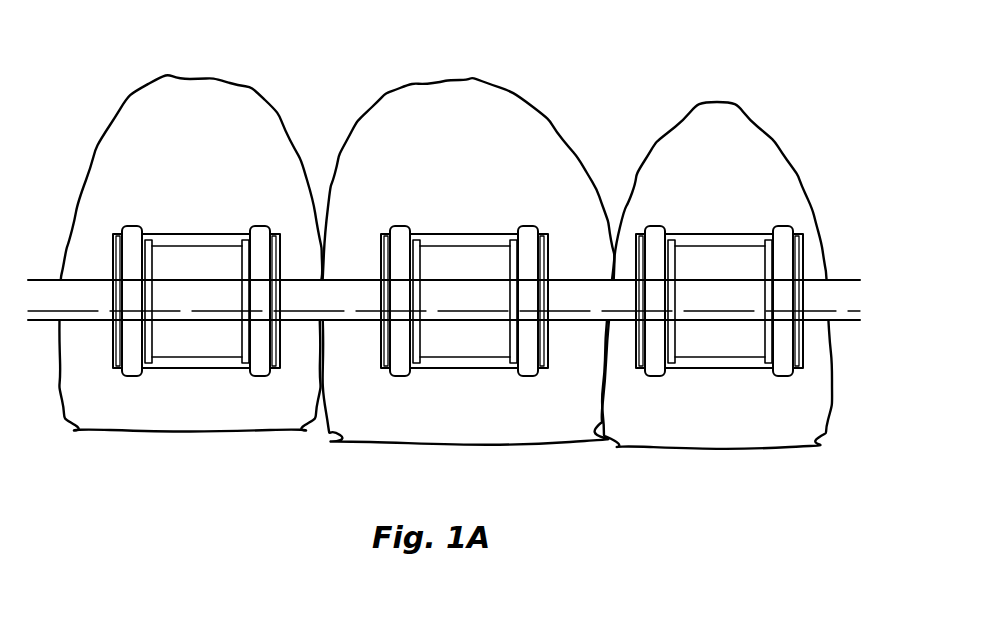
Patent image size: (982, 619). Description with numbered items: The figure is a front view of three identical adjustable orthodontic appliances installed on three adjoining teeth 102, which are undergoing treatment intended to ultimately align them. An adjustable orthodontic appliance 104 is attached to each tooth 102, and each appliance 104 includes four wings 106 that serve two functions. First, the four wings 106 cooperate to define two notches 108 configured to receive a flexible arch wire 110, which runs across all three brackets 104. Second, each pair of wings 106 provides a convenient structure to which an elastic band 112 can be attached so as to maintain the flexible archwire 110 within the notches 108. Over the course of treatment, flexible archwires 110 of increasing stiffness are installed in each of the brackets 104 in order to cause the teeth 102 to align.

The teeth 102 is at (195, 100).
The adjustable orthodontic appliance 104 is at (206, 362).
The wings 106 is at (132, 232).
The notches 108 is at (262, 293).
The flexible arch wire 110 is at (840, 295).
The elastic band 112 is at (118, 337).